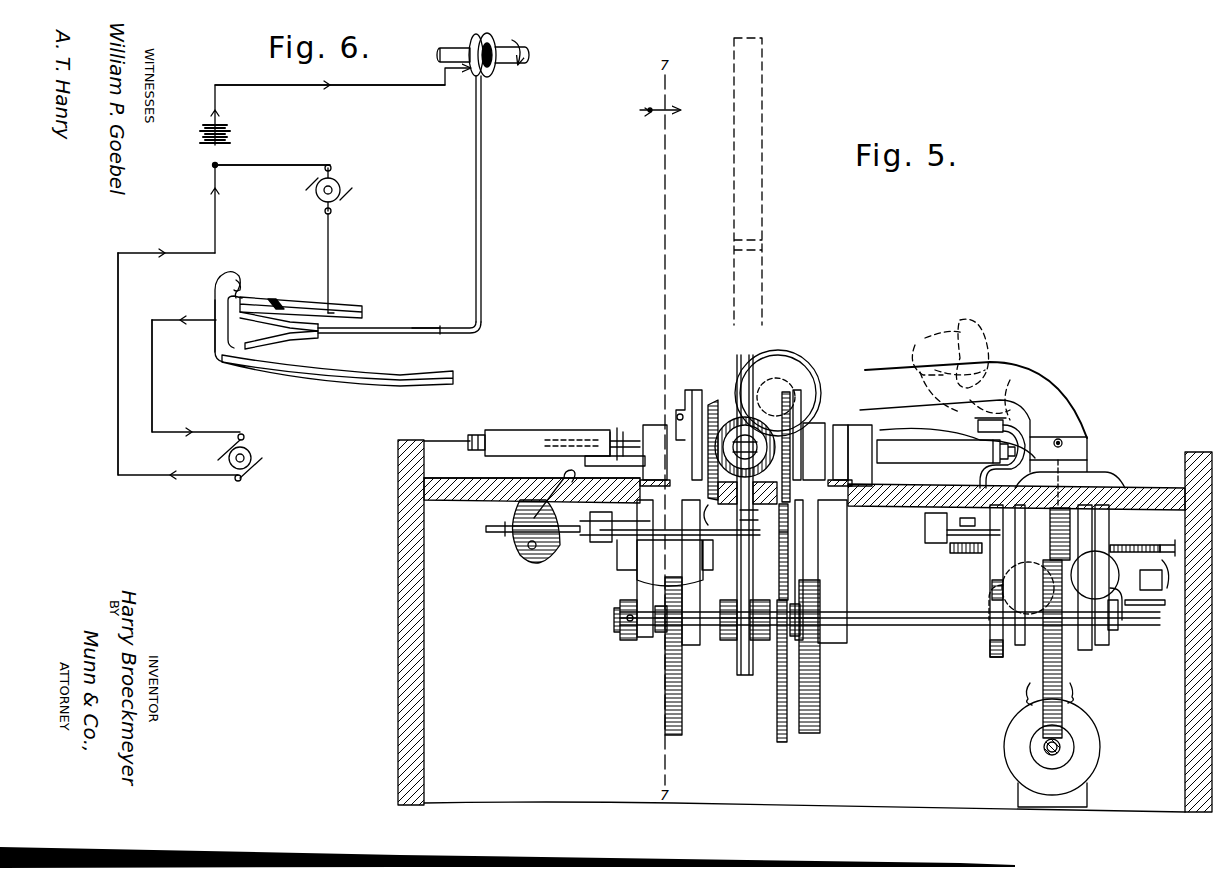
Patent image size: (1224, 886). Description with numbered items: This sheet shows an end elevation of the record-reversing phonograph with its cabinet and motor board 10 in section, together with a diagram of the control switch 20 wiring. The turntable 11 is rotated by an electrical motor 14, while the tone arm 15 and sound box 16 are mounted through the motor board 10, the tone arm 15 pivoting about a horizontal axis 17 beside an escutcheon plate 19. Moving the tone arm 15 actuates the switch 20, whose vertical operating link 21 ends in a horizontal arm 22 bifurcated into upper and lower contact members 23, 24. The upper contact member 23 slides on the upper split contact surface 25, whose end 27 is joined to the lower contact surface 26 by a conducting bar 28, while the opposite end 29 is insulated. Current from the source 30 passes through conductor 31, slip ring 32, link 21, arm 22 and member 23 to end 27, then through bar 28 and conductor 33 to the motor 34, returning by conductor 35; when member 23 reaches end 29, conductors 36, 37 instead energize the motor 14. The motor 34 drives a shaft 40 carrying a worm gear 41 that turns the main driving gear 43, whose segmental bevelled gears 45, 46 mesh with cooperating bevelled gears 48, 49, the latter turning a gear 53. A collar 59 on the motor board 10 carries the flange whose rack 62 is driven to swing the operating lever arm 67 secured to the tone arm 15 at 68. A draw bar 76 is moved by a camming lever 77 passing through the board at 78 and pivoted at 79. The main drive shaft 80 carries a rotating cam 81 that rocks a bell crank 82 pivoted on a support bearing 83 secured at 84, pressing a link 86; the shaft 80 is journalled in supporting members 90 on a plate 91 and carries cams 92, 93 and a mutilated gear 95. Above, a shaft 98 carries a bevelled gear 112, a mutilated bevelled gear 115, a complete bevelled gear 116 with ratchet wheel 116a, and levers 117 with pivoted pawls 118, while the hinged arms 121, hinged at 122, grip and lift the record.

In FIG. 5, the motor board and cabinet 10 is at (455, 500).
In FIG. 5, the turntable 11 is at (615, 466).
In FIG. 6, the electrical motor 14 is at (340, 170).
In FIG. 5, the electrical motor 14 is at (618, 568).
In FIG. 5, the tone arm 15 is at (1068, 395).
In FIG. 5, the sound box 16 is at (812, 370).
In FIG. 6, the horizontal axis 17 is at (432, 54).
In FIG. 5, the horizontal axis 17 is at (1064, 440).
In FIG. 5, the escutcheon plate 19 is at (1112, 476).
In FIG. 6, the control switch 20 is at (310, 384).
In FIG. 6, the vertical operating link 21 is at (484, 172).
In FIG. 6, the horizontal arm 22 is at (407, 328).
In FIG. 6, the upper contact member 23 is at (266, 326).
In FIG. 6, the lower contact member 24 is at (299, 342).
In FIG. 6, the upper split contact surface 25 is at (275, 285).
In FIG. 5, the upper split contact surface 25 is at (1162, 570).
In FIG. 6, the lower contact surface 26 is at (380, 370).
In FIG. 5, the lower contact surface 26 is at (1118, 615).
In FIG. 6, the end of upper contact 27 is at (232, 272).
In FIG. 6, the conducting bar 28 is at (210, 308).
In FIG. 5, the conducting bar 28 is at (1150, 606).
In FIG. 6, the opposite end of contact surface 29 is at (347, 298).
In FIG. 5, the opposite end of contact surface 29 is at (1132, 545).
In FIG. 6, the source of electrical energy 30 is at (230, 135).
In FIG. 6, the conductor 31 is at (415, 88).
In FIG. 6, the slip ring connection 32 is at (493, 80).
In FIG. 6, the conductor 33 is at (158, 372).
In FIG. 5, the conductor 33 is at (1076, 690).
In FIG. 6, the electrical motor 34 is at (252, 450).
In FIG. 5, the electrical motor 34 is at (1006, 735).
In FIG. 6, the conductor 35 is at (118, 388).
In FIG. 5, the conductor 35 is at (1022, 694).
In FIG. 6, the conductor 36 is at (344, 263).
In FIG. 6, the conductor 37 is at (272, 155).
In FIG. 5, the motor shaft 40 is at (1049, 755).
In FIG. 5, the worm gear 41 is at (1062, 747).
In FIG. 5, the main driving gear 43 is at (1058, 752).
In FIG. 5, the segmental bevelled gear 45 is at (1066, 520).
In FIG. 5, the segmental bevelled gear 46 is at (1043, 670).
In FIG. 5, the cooperating bevelled gear 48 is at (1118, 625).
In FIG. 5, the cooperating bevelled gear 49 is at (1015, 590).
In FIG. 5, the gear 53 is at (1002, 578).
In FIG. 5, the collar 59 is at (1170, 540).
In FIG. 5, the rack 62 is at (955, 555).
In FIG. 5, the operating lever arm 67 is at (985, 484).
In FIG. 5, the securing point 68 is at (978, 427).
In FIG. 5, the draw bar 76 is at (575, 540).
In FIG. 5, the camming lever 77 is at (554, 486).
In FIG. 5, the opening in motor board 78 is at (512, 466).
In FIG. 5, the pivot 79 is at (512, 516).
In FIG. 5, the main drive shaft 80 is at (885, 632).
In FIG. 5, the rotating cam 81 is at (990, 656).
In FIG. 5, the bell crank 82 is at (989, 590).
In FIG. 5, the main shaft support bearing 83 is at (1092, 648).
In FIG. 5, the securing point 84 is at (1112, 510).
In FIG. 5, the link 86 is at (925, 525).
In FIG. 5, the supporting members 90 is at (640, 640).
In FIG. 5, the plate 91 is at (872, 478).
In FIG. 5, the cam 92 is at (662, 700).
In FIG. 5, the cam 93 is at (820, 690).
In FIG. 5, the mutilated gear 95 is at (778, 744).
In FIG. 5, the shaft 98 is at (848, 425).
In FIG. 5, the bevelled gear 112 is at (735, 400).
In FIG. 5, the mutilated bevelled gear 115 is at (785, 360).
In FIG. 5, the complete bevelled gear 116 is at (728, 350).
In FIG. 5, the ratchet wheel 116a is at (790, 508).
In FIG. 5, the levers 117 is at (640, 425).
In FIG. 5, the pivoted pawls 118 is at (690, 390).
In FIG. 5, the hinged arms 121 is at (524, 418).
In FIG. 5, the hinge 122 is at (618, 425).